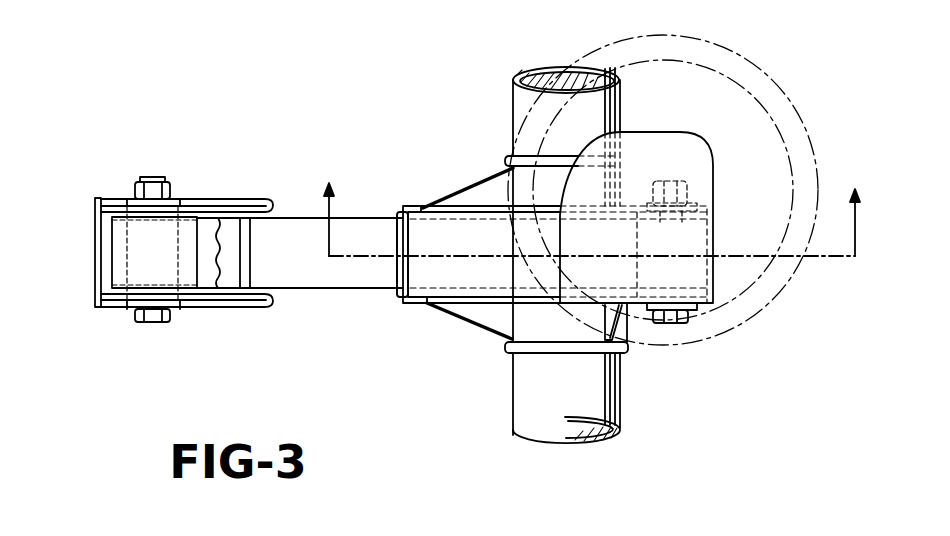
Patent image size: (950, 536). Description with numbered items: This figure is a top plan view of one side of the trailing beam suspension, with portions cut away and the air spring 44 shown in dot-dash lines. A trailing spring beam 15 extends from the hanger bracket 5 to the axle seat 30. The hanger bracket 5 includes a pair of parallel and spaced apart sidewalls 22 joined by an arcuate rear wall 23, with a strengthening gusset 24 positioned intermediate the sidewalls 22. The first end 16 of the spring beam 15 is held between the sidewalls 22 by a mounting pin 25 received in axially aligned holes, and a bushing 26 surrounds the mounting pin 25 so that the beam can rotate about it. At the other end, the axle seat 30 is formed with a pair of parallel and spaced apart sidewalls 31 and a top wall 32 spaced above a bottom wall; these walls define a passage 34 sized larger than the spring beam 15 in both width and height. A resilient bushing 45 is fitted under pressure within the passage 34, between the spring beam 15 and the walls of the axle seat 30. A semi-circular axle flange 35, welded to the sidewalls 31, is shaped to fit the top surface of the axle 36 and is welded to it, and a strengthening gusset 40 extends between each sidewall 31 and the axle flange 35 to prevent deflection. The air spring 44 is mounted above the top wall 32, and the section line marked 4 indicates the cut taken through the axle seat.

The section line 4- 4 is at (592, 208).
The hanger bracket 5 is at (110, 199).
The trailing spring beam 15 is at (302, 212).
The first end 16 is at (100, 262).
The sidewalls 22 is at (207, 198).
The arcuate rear wall 23 is at (97, 232).
The strengthening gusset 24 is at (230, 288).
The mounting pin 25 is at (150, 177).
The bushing 26 is at (142, 270).
The axle seat 30 is at (630, 334).
The sidewalls 31 is at (422, 208).
The top wall 32 is at (427, 283).
The passage 34 is at (410, 228).
The axle flange 35 is at (578, 343).
The axle 36 is at (546, 428).
The strengthening gusset 40 is at (468, 195).
The air spring 44 is at (764, 66).
The resilient bushing 45 is at (398, 278).